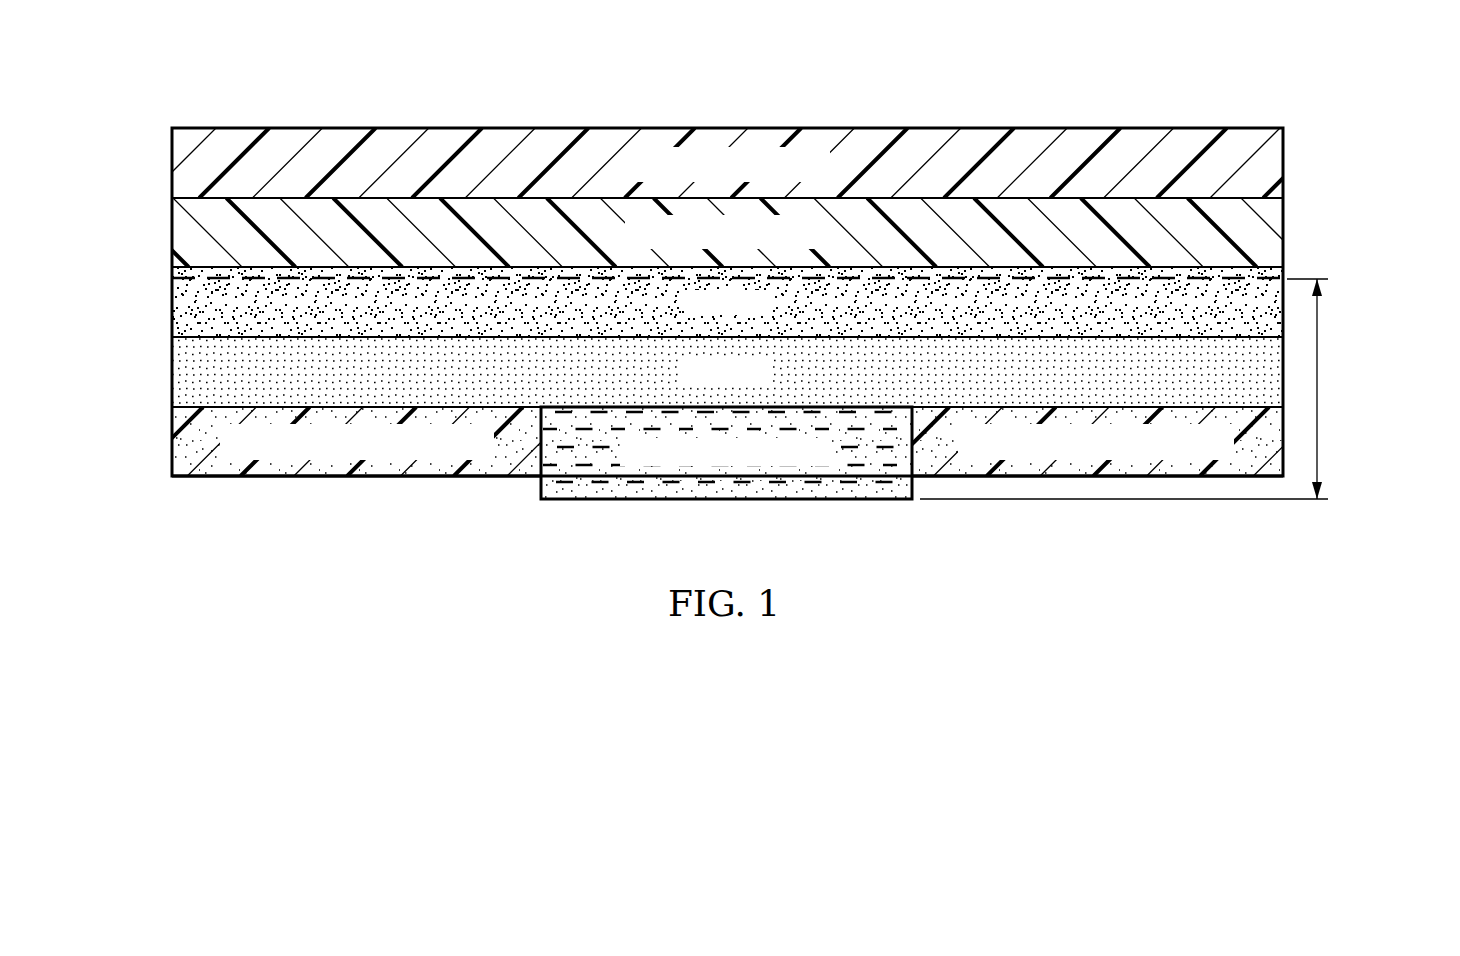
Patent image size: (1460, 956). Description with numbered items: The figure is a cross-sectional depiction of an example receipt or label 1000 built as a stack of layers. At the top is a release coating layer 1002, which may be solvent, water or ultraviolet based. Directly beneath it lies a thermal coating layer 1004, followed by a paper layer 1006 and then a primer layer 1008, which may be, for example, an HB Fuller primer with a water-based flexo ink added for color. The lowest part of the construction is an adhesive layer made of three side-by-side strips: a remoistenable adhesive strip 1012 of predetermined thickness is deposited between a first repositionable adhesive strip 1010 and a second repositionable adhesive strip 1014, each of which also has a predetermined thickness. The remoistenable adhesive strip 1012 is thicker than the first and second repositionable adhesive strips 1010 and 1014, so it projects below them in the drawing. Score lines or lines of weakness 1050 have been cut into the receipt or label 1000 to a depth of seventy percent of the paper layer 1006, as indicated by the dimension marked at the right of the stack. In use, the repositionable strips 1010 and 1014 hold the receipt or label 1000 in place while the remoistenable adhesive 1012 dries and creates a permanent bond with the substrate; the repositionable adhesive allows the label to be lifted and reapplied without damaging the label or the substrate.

The receipt or label 1000 is at (563, 92).
The release coating layer 1002 is at (178, 148).
The thermal coating layer 1004 is at (178, 226).
The paper layer 1006 is at (178, 302).
The primer layer 1008 is at (178, 372).
The first repositionable adhesive strip 1010 is at (322, 477).
The remoistenable adhesive strip 1012 is at (724, 492).
The second repositionable adhesive strip 1014 is at (1121, 477).
The score lines or lines of weakness 1050 is at (1318, 465).